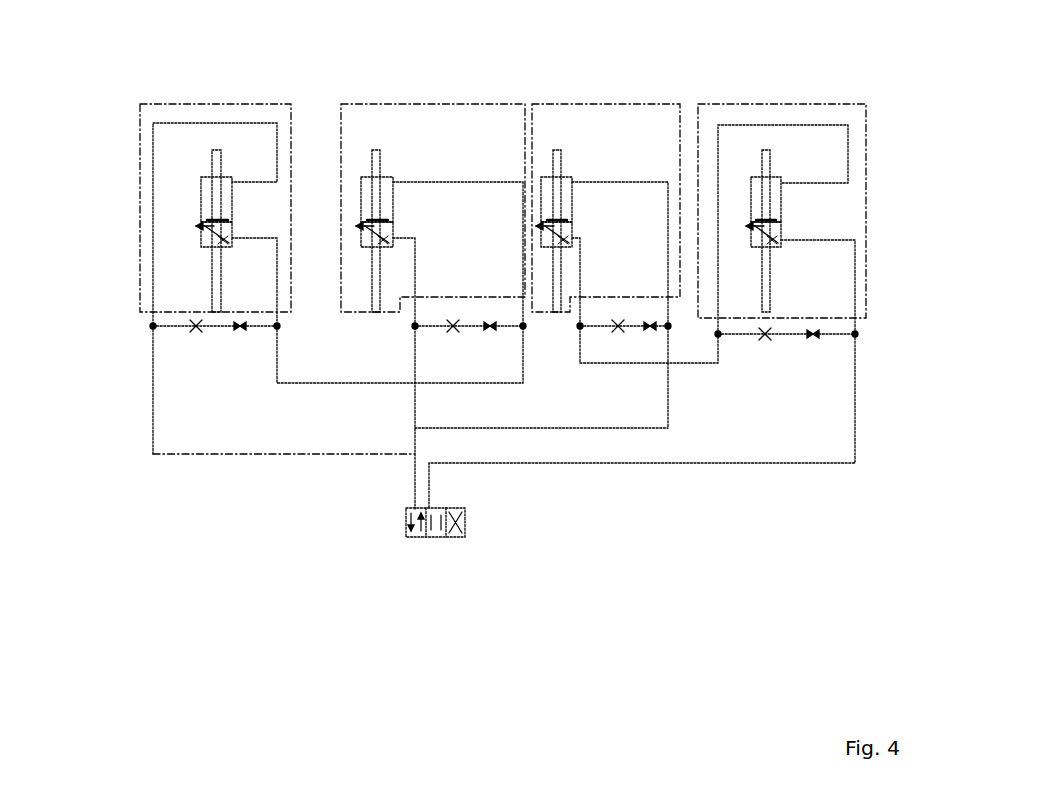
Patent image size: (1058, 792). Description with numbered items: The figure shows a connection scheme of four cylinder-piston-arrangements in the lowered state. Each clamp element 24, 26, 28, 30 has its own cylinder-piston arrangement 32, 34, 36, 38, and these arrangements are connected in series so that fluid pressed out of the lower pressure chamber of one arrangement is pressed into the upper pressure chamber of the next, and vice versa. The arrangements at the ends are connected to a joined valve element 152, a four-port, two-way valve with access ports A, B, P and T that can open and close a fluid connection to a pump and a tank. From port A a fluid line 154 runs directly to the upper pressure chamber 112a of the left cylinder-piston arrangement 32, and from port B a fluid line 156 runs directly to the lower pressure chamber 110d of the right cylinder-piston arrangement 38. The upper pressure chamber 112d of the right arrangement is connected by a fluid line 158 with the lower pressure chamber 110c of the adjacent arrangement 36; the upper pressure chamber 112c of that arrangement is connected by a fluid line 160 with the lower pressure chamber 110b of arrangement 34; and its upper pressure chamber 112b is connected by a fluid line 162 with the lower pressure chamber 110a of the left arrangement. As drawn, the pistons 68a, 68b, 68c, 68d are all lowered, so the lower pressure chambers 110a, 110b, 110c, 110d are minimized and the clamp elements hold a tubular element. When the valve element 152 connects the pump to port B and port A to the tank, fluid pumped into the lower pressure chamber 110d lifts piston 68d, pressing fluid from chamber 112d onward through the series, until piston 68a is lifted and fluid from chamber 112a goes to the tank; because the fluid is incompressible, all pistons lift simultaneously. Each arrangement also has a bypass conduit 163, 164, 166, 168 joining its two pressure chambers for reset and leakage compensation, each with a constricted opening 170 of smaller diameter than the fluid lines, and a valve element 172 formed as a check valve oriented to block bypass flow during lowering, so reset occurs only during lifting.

The clamp element 24 is at (182, 104).
The clamp element 26 is at (378, 103).
The clamp element 28 is at (545, 118).
The clamp element 30 is at (730, 112).
The cylinder-piston arrangement 32 is at (238, 98).
The cylinder-piston arrangement 34 is at (401, 122).
The cylinder-piston arrangement 36 is at (580, 128).
The cylinder-piston arrangement 38 is at (784, 140).
The upper pressure chamber 112a is at (207, 190).
The upper pressure chamber 112b is at (365, 200).
The upper pressure chamber 112c is at (565, 203).
The upper pressure chamber 112d is at (777, 190).
The piston 68a is at (200, 226).
The piston 68b is at (358, 226).
The piston 68c is at (542, 224).
The piston 68d is at (775, 225).
The lower pressure chamber 110a is at (203, 240).
The lower pressure chamber 110b is at (373, 237).
The lower pressure chamber 110c is at (580, 242).
The lower pressure chamber 110d is at (780, 238).
The valve element 152 is at (418, 538).
The fluid line 154 is at (256, 456).
The fluid line 156 is at (772, 463).
The fluid line 158 is at (693, 365).
The fluid line 160 is at (595, 428).
The fluid line 162 is at (357, 386).
The bypass conduit 163 is at (258, 330).
The bypass conduit 164 is at (473, 330).
The bypass conduit 166 is at (636, 322).
The bypass conduit 168 is at (793, 337).
The constricted opening 170 is at (450, 320).
The valve element 172 is at (490, 330).